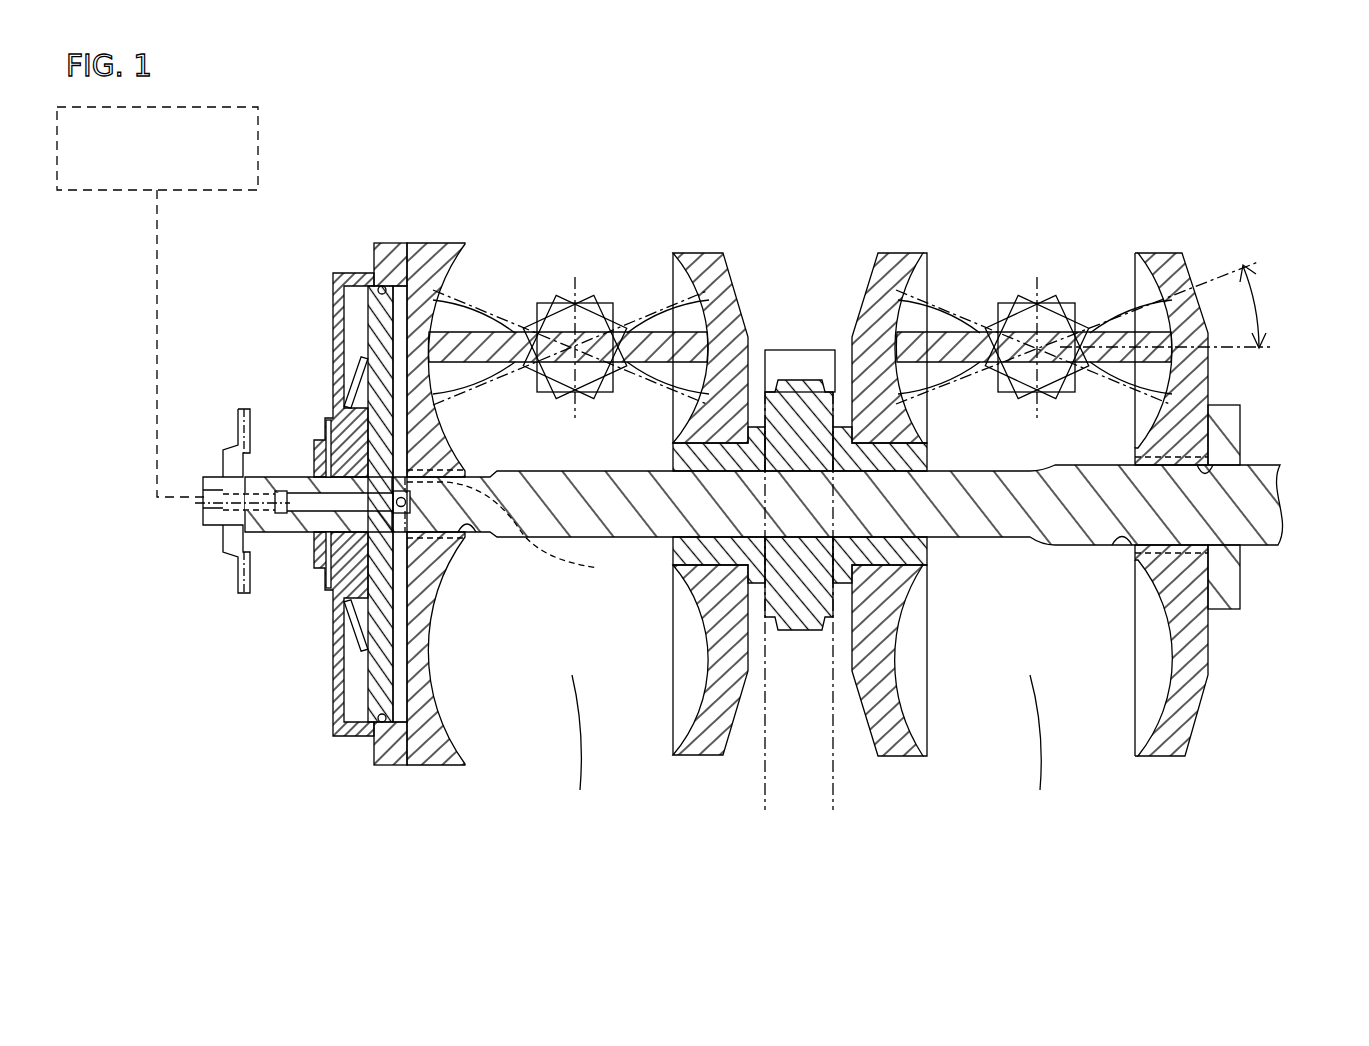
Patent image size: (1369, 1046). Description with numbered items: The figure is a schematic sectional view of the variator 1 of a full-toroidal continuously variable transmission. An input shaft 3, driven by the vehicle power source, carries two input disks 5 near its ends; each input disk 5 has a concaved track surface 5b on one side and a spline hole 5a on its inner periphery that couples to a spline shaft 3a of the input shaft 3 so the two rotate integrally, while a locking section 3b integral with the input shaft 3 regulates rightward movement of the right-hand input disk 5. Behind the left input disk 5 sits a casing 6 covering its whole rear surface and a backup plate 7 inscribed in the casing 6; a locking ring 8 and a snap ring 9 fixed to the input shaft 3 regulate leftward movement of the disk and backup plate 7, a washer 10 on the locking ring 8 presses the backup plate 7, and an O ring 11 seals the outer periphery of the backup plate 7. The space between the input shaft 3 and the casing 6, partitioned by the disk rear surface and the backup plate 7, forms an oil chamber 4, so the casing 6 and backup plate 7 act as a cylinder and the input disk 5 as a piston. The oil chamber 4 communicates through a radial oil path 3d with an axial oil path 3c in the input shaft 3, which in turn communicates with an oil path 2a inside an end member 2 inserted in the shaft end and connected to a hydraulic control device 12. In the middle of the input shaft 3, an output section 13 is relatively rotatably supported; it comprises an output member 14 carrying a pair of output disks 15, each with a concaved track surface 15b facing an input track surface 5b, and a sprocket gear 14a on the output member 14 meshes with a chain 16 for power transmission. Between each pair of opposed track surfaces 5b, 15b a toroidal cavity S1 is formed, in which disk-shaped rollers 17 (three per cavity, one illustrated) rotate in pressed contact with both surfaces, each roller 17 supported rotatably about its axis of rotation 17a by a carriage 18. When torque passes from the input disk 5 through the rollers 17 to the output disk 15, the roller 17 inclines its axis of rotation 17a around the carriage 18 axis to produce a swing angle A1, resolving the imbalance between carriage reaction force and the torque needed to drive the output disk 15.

The variator 1 is at (1097, 193).
The end member 2 is at (194, 507).
The oil path 2a is at (205, 522).
The input shaft 3 is at (770, 510).
The spline shaft 3a is at (400, 520).
The locking section 3b is at (1242, 586).
The oil path 3c is at (302, 512).
The oil path 3d is at (519, 534).
The oil chamber 4 is at (398, 598).
The input disk 5 is at (862, 469).
The spline hole 5a is at (470, 527).
The track surface 5b is at (432, 700).
The casing 6 is at (328, 464).
The backup plate 7 is at (368, 318).
The locking ring 8 is at (342, 590).
The snap ring 9 is at (314, 466).
The washer 10 is at (355, 371).
The O ring 11 is at (384, 765).
The hydraulic control device 12 is at (262, 148).
The output section 13 is at (802, 520).
The output member 14 is at (800, 555).
The sprocket gear 14a is at (803, 632).
The output disk 15 is at (802, 464).
The track surface 15b is at (706, 690).
The chain 16 is at (788, 350).
The roller 17 is at (843, 358).
The axis of rotation 17a is at (582, 408).
The carriage 18 is at (603, 303).
The swing angle A1 is at (1180, 306).
The toroidal cavity S1 is at (599, 818).